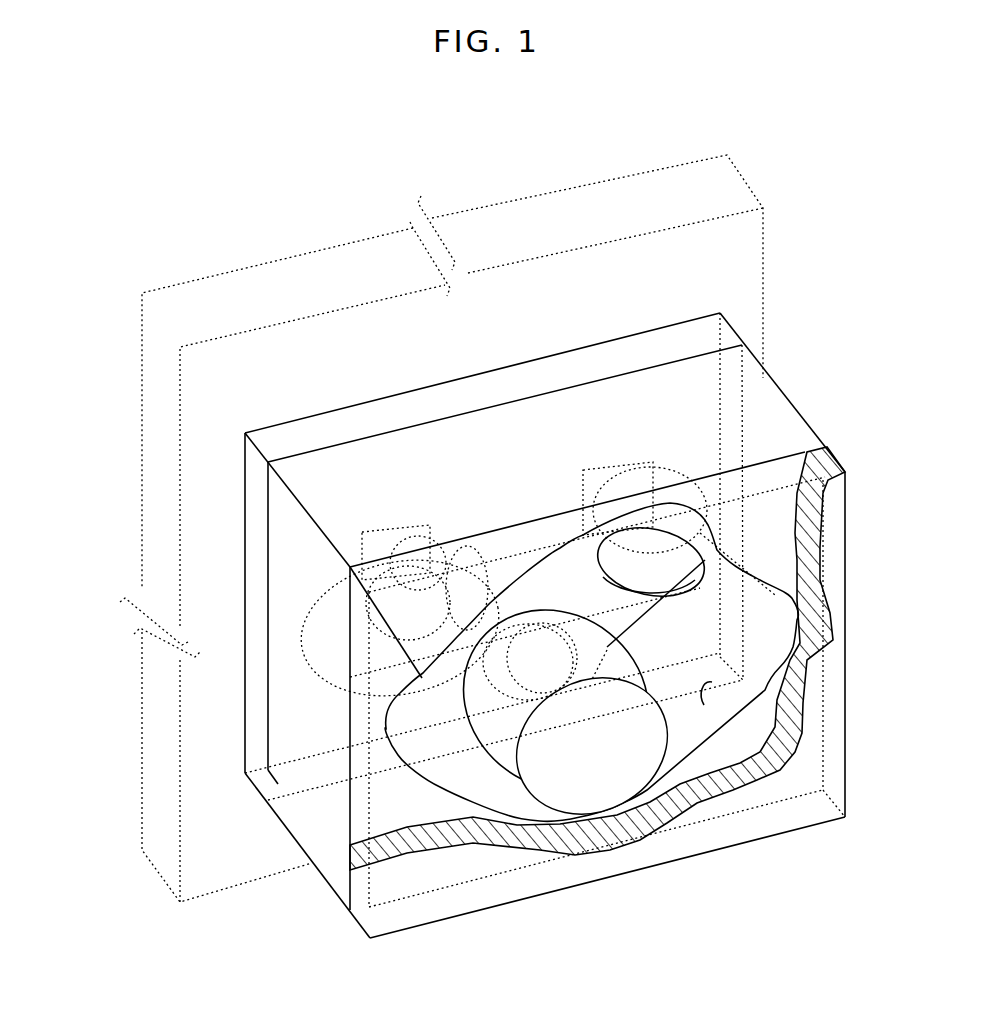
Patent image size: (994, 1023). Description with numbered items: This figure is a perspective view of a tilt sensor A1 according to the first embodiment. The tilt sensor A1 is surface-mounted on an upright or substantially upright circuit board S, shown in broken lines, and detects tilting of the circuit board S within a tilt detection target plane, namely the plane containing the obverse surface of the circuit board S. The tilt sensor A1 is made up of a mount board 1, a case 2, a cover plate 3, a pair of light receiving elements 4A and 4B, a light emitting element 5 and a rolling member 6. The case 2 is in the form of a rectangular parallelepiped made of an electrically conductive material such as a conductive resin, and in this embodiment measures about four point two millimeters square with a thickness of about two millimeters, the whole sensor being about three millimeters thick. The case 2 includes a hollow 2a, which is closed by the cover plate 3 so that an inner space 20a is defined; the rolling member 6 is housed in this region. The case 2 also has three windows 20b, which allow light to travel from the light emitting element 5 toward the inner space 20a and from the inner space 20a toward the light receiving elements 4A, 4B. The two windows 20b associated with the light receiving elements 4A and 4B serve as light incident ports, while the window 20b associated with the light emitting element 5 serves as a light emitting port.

The mount board 1 is at (735, 320).
The case 2 is at (763, 390).
The hollow 2a is at (707, 683).
The cover plate 3 is at (830, 462).
The light receiving element 4A is at (372, 527).
The light receiving element 4B is at (607, 478).
The light emitting element 5 is at (510, 573).
The rolling member 6 is at (623, 757).
The inner space 20a is at (433, 748).
The window 20b is at (482, 470).
The circuit board S is at (140, 507).
The tilt sensor A1 is at (326, 907).